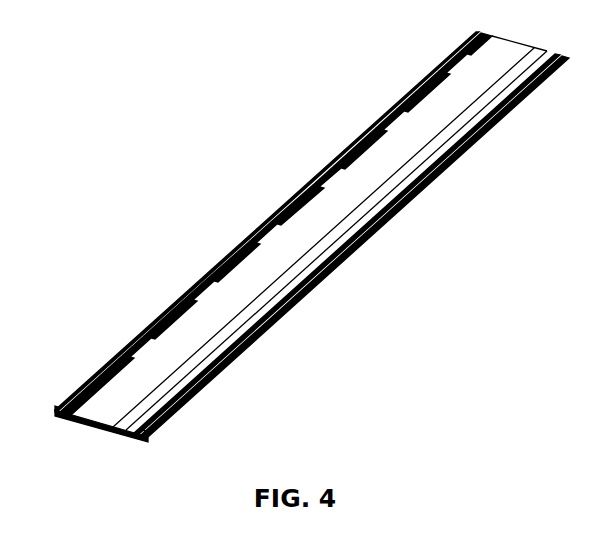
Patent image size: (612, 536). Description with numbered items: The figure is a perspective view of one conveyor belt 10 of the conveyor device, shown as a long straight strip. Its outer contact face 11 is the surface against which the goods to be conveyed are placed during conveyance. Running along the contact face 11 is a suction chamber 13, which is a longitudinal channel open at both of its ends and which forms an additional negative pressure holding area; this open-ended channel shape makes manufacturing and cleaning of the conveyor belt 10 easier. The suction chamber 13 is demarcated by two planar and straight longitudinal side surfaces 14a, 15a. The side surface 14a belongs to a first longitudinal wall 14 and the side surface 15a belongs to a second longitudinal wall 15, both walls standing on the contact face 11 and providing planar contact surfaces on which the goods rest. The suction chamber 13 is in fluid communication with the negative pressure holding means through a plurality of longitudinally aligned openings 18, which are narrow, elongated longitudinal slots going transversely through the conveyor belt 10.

The conveyor belt 10 is at (207, 92).
The contact face 11 is at (190, 292).
The suction chamber 13 is at (337, 274).
The first longitudinal wall 14 is at (371, 121).
The side surface 14a is at (67, 428).
The second longitudinal wall 15 is at (473, 136).
The side surface 15a is at (116, 432).
The opening 18 is at (280, 212).